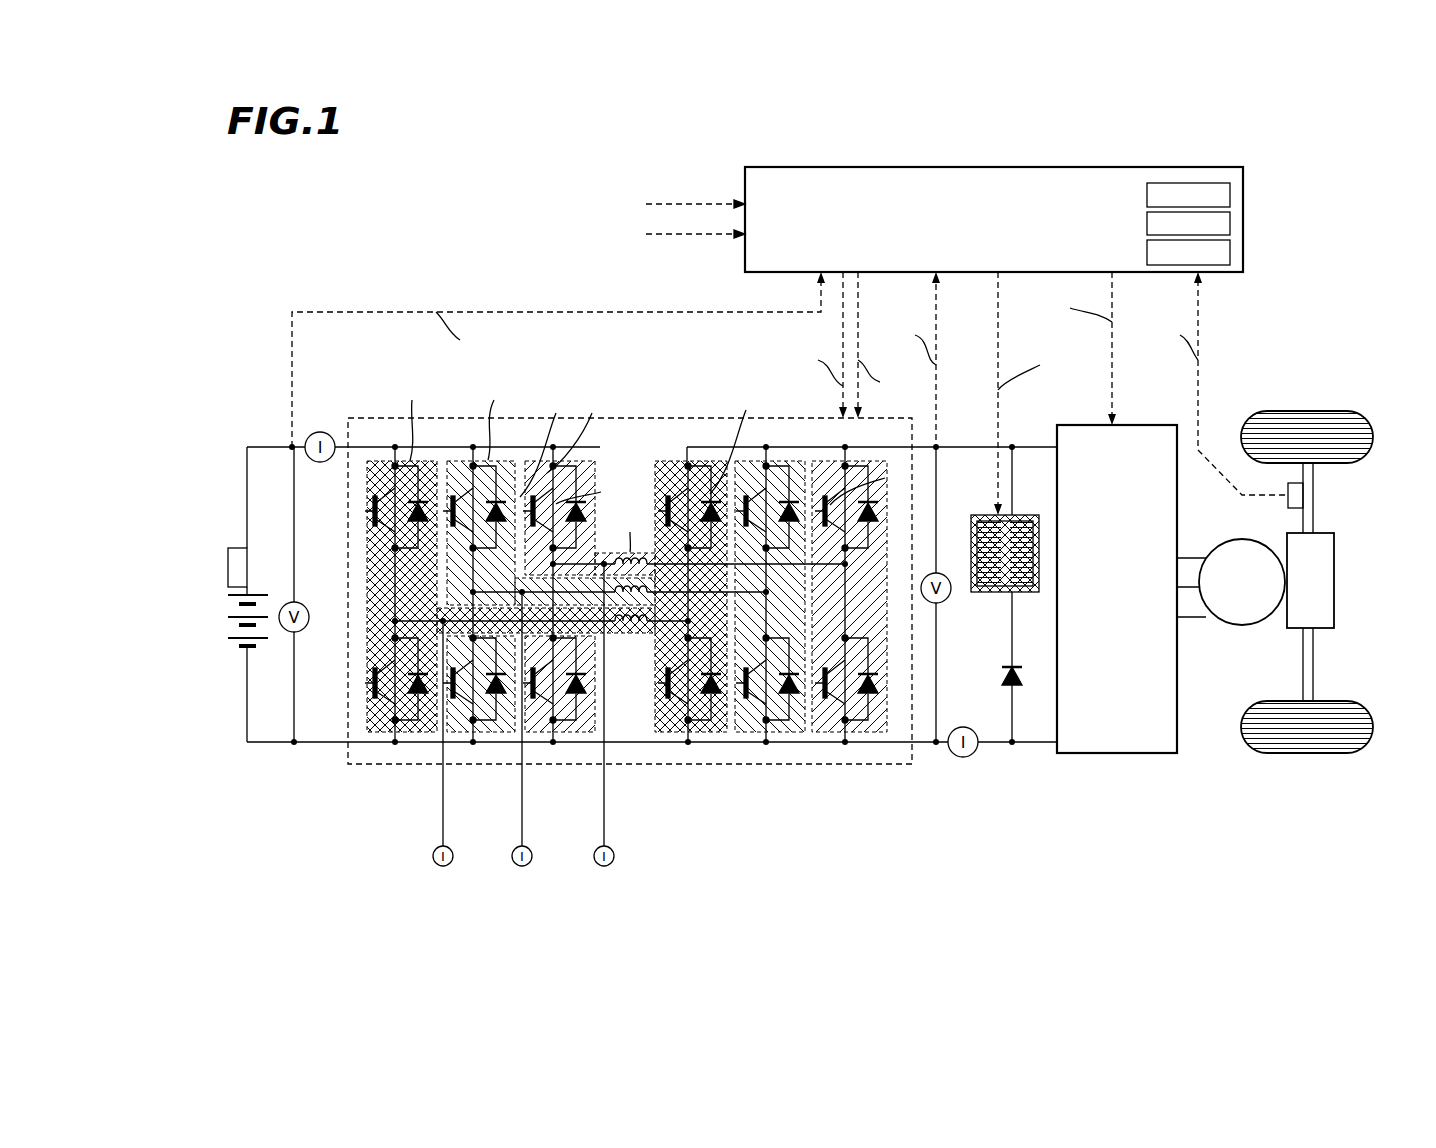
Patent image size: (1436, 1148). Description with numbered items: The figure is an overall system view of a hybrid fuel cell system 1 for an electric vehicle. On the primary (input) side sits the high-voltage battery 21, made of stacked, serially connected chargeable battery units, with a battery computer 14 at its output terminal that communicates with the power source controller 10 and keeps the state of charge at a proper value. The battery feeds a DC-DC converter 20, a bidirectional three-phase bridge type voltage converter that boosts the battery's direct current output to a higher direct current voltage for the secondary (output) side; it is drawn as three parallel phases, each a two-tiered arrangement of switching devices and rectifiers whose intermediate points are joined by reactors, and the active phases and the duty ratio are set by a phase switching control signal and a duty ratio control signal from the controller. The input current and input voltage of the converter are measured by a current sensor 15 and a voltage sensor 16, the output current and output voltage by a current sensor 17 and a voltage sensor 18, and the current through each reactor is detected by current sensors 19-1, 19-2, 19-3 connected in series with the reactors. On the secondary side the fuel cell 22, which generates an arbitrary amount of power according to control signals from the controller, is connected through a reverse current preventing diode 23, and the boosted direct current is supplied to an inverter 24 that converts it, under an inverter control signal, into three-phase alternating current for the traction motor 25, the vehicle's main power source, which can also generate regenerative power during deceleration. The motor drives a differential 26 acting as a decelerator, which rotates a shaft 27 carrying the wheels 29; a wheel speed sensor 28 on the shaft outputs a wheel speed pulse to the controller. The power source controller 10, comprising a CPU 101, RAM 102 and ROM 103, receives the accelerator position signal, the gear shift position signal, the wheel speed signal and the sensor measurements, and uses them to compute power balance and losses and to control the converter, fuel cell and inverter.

The hybrid fuel cell system 1 is at (270, 299).
The power source controller 10 is at (1130, 167).
The central processing unit (CPU) 101 is at (1232, 248).
The RAM 102 is at (1232, 218).
The ROM 103 is at (1232, 190).
The battery computer 14 is at (228, 555).
The current sensor 15 is at (325, 432).
The voltage sensor 16 is at (296, 600).
The current sensor 17 is at (960, 726).
The voltage sensor 18 is at (950, 572).
The current sensor 19-1 is at (447, 866).
The current sensor 19-2 is at (526, 866).
The current sensor 19-3 is at (608, 866).
The DC-DC converter 20 is at (697, 417).
The high-voltage battery 21 is at (262, 594).
The fuel cell 22 is at (1022, 514).
The reverse current preventing diode 23 is at (1020, 667).
The inverter 24 is at (1133, 425).
The traction motor 25 is at (1233, 540).
The differential 26 is at (1335, 575).
The shaft 27 is at (1314, 514).
The wheel speed sensor 28 is at (1288, 492).
The wheels 29 is at (1310, 411).